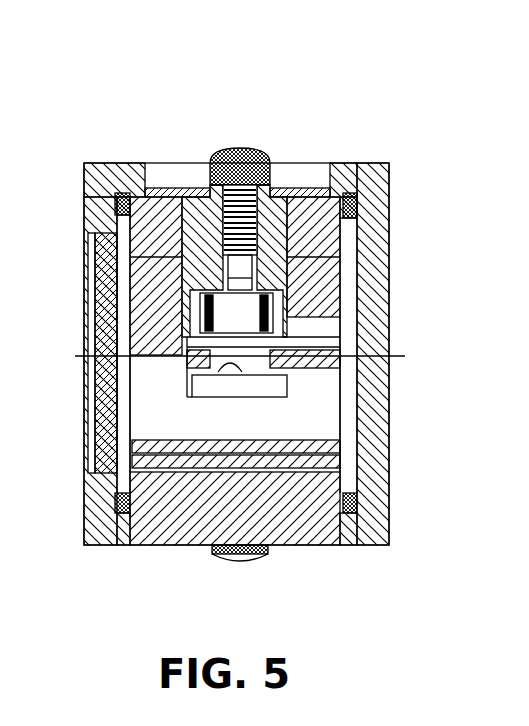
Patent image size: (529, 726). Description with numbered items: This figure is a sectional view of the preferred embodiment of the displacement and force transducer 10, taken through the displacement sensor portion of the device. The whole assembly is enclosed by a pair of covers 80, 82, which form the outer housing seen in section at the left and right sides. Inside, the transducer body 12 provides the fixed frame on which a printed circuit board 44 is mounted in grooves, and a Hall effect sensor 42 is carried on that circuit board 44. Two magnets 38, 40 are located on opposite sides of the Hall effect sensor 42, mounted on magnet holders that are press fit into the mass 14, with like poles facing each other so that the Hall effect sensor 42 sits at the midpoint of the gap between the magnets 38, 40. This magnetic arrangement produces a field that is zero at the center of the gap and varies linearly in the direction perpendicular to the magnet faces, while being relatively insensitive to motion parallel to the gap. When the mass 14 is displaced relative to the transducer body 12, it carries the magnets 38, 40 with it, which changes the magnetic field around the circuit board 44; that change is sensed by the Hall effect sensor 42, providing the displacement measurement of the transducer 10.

The displacement and force transducer 10 is at (349, 104).
The transducer body 12 is at (143, 233).
The mass 14 is at (330, 277).
The magnet 38 is at (190, 315).
The magnet 40 is at (221, 365).
The Hall effect sensor 42 is at (263, 352).
The printed circuit board 44 is at (333, 367).
The cover 80 is at (98, 163).
The cover 82 is at (383, 163).